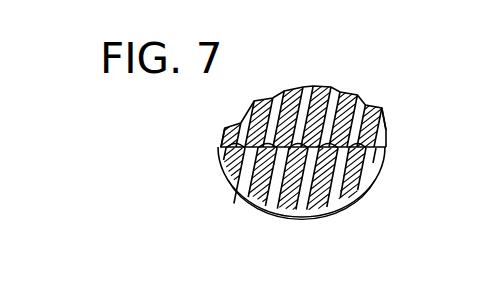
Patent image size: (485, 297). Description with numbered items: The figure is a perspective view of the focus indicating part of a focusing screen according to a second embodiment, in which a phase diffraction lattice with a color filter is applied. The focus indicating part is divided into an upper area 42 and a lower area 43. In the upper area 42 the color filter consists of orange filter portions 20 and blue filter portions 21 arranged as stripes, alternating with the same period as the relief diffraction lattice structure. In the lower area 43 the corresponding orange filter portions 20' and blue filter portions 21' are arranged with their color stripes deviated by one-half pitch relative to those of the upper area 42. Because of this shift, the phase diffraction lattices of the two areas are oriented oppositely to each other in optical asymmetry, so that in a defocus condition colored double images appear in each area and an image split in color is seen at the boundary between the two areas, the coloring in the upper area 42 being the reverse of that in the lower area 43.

The orange filter portions 20 is at (303, 92).
The blue filter portions 21 is at (303, 92).
The orange filter portions 20' is at (300, 206).
The blue filter portions 21' is at (295, 203).
The upper area 42 is at (383, 127).
The lower area 43 is at (385, 167).